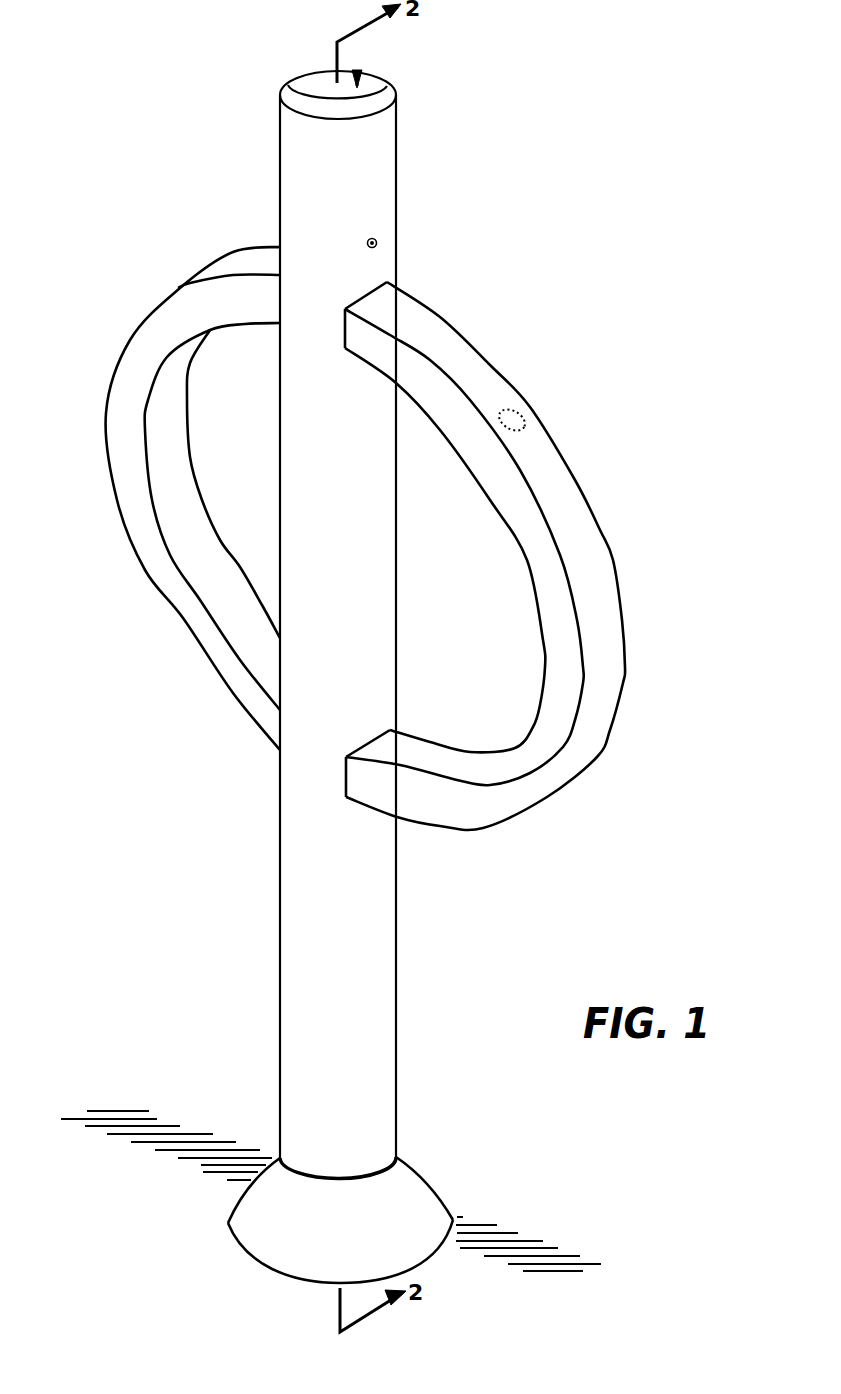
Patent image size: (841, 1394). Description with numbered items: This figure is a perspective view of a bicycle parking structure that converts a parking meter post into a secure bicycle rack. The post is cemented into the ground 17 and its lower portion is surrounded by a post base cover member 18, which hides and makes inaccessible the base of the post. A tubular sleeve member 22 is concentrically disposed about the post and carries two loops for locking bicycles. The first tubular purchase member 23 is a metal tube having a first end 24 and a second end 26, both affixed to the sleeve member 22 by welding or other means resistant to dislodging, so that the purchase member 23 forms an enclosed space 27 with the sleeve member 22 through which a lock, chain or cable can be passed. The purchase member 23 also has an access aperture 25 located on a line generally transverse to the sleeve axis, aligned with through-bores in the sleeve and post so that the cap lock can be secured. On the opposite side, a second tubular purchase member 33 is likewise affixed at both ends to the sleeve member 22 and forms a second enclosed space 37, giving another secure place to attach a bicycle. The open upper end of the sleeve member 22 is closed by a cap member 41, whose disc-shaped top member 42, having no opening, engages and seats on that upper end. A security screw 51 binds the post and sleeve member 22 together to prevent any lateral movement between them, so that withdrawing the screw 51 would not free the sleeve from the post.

The ground 17 is at (523, 1250).
The post base cover member 18 is at (420, 1188).
The tubular sleeve member 22 is at (390, 167).
The first tubular purchase member 23 is at (601, 592).
The first end 24 is at (370, 298).
The access aperture 25 is at (527, 414).
The second end 26 is at (368, 745).
The enclosed space 27 is at (473, 615).
The second tubular purchase member 33 is at (185, 618).
The enclosed space 37 is at (248, 437).
The cap member 41 is at (362, 72).
The disc-shaped top member 42 is at (305, 75).
The security screw 51 is at (377, 240).